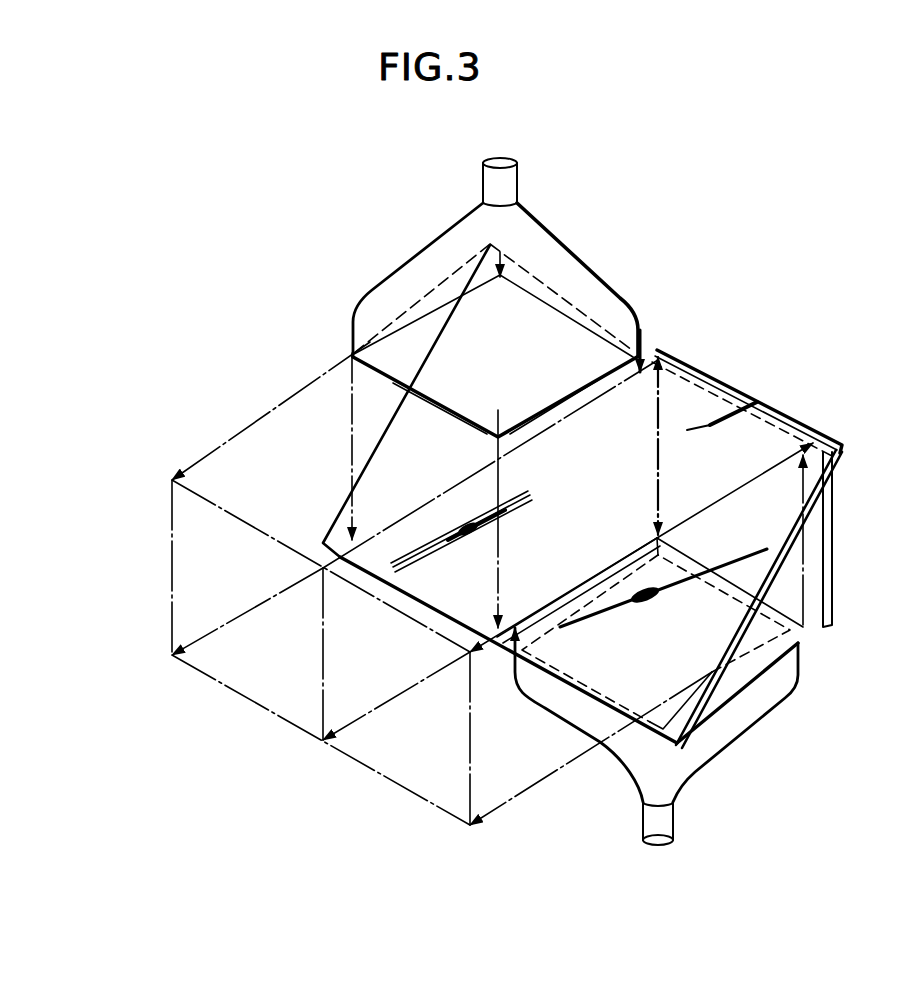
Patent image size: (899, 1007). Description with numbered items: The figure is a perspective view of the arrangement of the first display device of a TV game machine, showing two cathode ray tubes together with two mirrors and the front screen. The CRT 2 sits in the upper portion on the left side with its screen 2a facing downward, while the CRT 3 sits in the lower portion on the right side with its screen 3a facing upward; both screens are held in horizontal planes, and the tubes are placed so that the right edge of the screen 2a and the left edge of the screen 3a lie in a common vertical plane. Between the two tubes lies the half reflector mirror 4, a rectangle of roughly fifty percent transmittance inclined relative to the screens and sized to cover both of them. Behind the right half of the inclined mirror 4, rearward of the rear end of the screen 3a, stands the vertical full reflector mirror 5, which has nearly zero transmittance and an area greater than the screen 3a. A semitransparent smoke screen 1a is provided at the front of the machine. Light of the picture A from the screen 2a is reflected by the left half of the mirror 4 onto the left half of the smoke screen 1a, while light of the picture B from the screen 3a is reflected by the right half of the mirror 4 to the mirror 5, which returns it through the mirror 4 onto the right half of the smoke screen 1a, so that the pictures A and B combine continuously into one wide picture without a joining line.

The smoke screen 1a is at (171, 543).
The CRT 2 is at (565, 255).
The screen 2a is at (543, 392).
The CRT 3 is at (745, 735).
The screen 3a is at (755, 643).
The half reflector mirror 4 is at (378, 437).
The full reflector mirror 5 is at (834, 573).
The picture A is at (563, 333).
The picture B is at (412, 767).